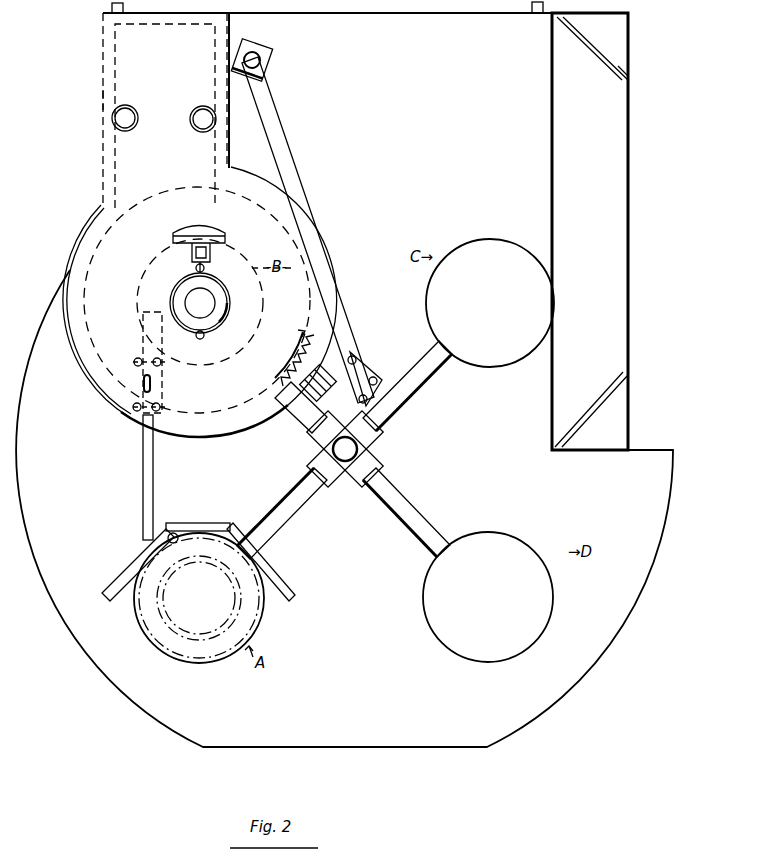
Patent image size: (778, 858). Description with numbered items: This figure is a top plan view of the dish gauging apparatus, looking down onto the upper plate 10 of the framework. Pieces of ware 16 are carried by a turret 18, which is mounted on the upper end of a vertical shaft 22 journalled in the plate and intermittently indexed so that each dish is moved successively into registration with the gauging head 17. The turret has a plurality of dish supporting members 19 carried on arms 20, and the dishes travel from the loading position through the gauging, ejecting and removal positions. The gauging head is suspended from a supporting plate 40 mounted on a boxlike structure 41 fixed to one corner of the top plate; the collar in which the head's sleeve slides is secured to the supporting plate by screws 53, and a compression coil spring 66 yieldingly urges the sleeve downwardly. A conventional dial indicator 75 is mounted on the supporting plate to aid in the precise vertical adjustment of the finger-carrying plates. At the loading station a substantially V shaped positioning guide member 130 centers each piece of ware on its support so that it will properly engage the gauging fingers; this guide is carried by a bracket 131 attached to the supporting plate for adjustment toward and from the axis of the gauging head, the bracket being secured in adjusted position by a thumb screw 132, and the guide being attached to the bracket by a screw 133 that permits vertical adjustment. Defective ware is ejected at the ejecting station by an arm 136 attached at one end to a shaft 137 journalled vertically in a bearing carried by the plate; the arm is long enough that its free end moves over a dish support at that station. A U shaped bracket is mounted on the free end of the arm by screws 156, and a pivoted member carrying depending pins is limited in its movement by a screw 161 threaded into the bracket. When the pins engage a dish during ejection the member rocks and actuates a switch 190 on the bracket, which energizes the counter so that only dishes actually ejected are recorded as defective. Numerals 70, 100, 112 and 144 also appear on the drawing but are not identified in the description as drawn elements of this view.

The upper plate 10 is at (344, 374).
The piece of ware 16 is at (260, 626).
The gauging head 17 is at (88, 407).
The turret 18 is at (378, 461).
The dish supporting member 19 is at (488, 450).
The arm 20 is at (410, 511).
The shaft 22 is at (358, 449).
The supporting plate 40 is at (165, 110).
The boxlike structure 41 is at (104, 100).
The screws 53 is at (205, 268).
The compression coil spring 66 is at (229, 313).
The hub 70 is at (200, 303).
The dial indicator 75 is at (225, 240).
The roller 100 is at (143, 119).
The roller 112 is at (194, 111).
The positioning guide member 130 is at (288, 574).
The bracket 131 is at (153, 494).
The thumb screw 132 is at (151, 383).
The screw 133 is at (181, 529).
The arm 136 is at (300, 185).
The shaft 137 is at (262, 59).
The pawl 144 is at (312, 365).
The screws 156 is at (356, 360).
The screw 161 is at (377, 382).
The switch 190 is at (300, 411).